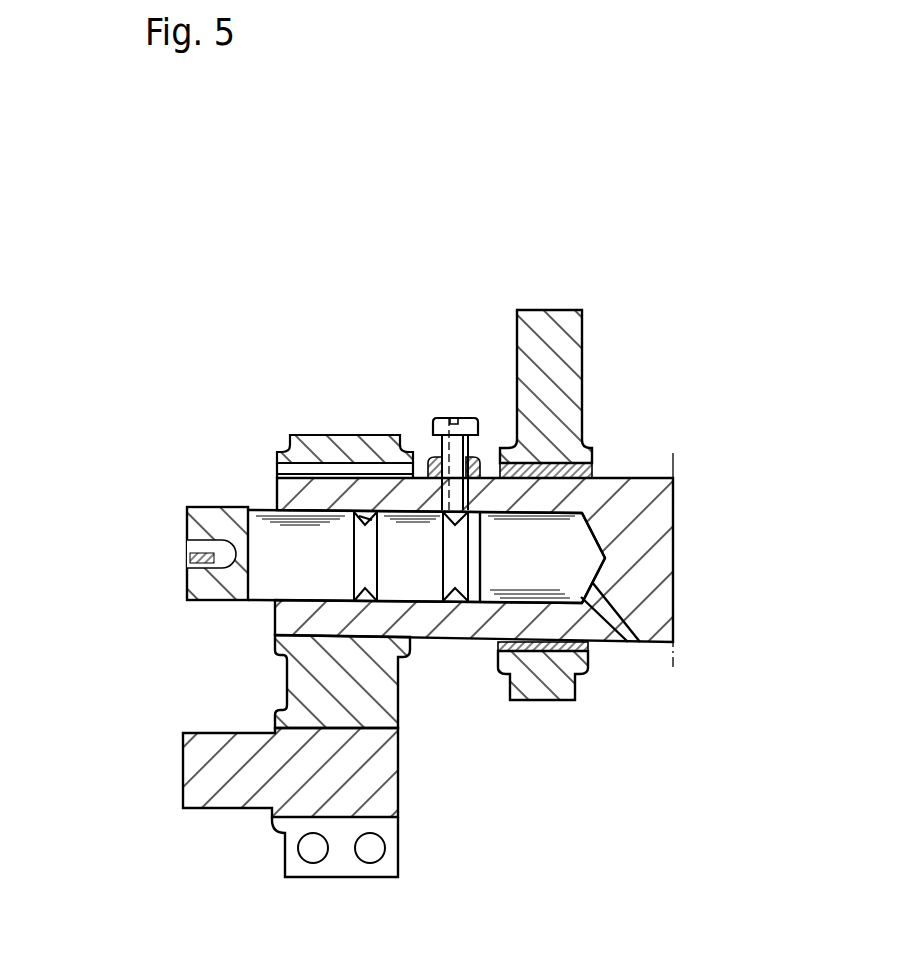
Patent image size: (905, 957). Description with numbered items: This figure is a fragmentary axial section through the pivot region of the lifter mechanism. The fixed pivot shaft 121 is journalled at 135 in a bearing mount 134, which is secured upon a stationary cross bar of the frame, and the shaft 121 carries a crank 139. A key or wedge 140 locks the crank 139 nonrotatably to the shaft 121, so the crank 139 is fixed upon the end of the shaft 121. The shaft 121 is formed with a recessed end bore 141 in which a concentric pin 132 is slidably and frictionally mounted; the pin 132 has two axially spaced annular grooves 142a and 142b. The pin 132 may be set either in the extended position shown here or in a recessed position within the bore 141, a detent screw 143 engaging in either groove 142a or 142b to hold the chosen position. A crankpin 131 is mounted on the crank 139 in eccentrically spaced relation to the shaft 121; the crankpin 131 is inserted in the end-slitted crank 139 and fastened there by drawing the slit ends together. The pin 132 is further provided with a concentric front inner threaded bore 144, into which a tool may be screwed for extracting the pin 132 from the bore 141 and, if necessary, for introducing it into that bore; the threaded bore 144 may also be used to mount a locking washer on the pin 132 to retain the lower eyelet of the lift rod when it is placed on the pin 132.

The fixed pivot shaft 121 is at (648, 530).
The crankpin 131 is at (213, 787).
The concentric pin 132 is at (237, 507).
The bearing mount 134 is at (582, 316).
The journal 135 is at (660, 529).
The crank 139 is at (335, 678).
The key or wedge 140 is at (360, 473).
The recessed end bore 141 is at (552, 538).
The annular groove 142a is at (352, 621).
The annular groove 142b is at (450, 603).
The detent screw 143 is at (448, 418).
The threaded bore 144 is at (195, 408).